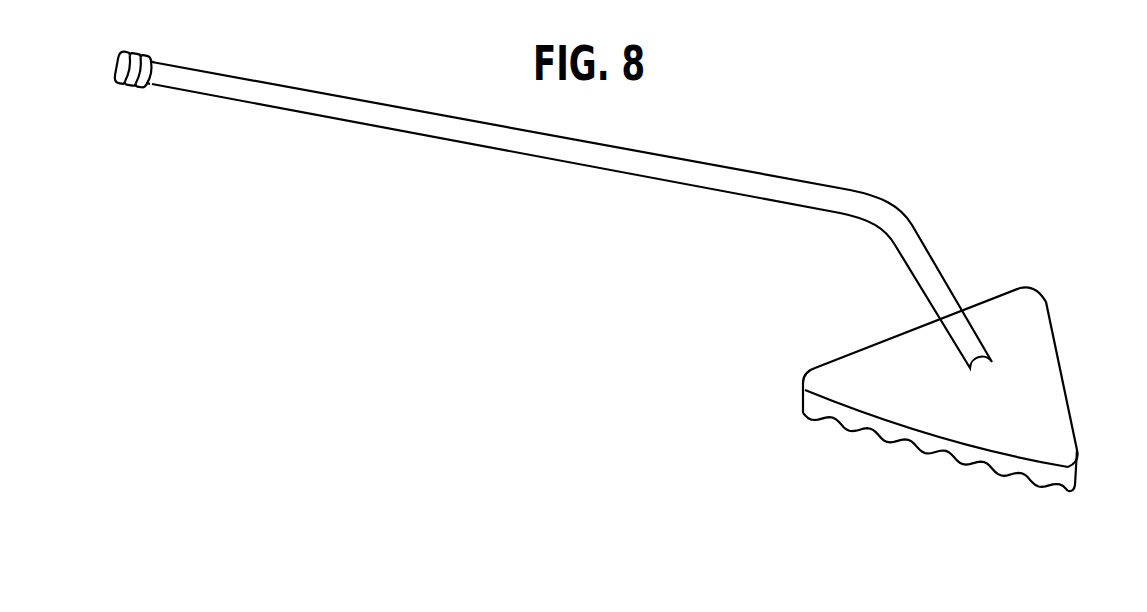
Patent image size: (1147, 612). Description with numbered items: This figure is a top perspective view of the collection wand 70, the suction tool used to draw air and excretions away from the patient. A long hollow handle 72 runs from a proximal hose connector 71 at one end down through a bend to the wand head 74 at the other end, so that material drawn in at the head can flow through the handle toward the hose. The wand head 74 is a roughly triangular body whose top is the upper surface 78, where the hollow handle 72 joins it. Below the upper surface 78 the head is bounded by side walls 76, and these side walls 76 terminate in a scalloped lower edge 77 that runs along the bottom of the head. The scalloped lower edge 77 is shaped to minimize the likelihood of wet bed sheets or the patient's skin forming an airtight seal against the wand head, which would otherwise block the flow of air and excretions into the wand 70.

The collection wand 70 is at (460, 207).
The proximal hose connector 71 is at (133, 91).
The hollow handle 72 is at (708, 164).
The head 74 is at (1050, 313).
The side walls 76 is at (1053, 477).
The scalloped lower edge 77 is at (918, 458).
The upper surface 78 is at (1030, 382).